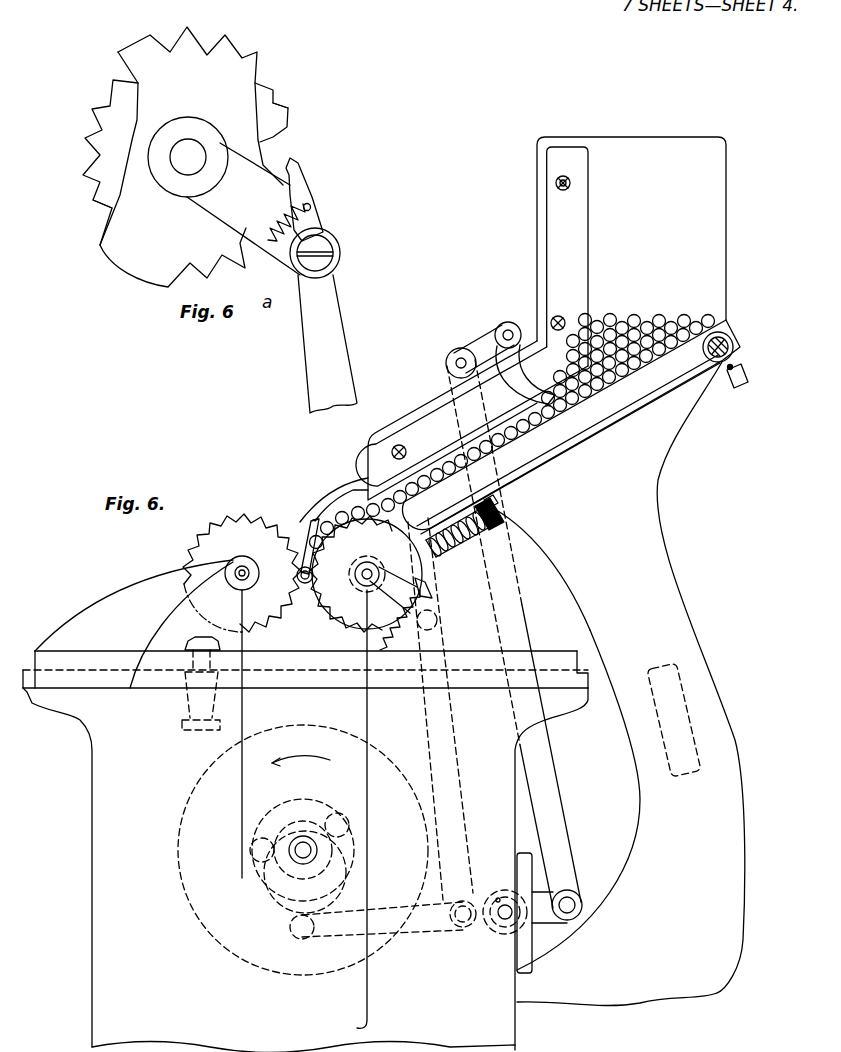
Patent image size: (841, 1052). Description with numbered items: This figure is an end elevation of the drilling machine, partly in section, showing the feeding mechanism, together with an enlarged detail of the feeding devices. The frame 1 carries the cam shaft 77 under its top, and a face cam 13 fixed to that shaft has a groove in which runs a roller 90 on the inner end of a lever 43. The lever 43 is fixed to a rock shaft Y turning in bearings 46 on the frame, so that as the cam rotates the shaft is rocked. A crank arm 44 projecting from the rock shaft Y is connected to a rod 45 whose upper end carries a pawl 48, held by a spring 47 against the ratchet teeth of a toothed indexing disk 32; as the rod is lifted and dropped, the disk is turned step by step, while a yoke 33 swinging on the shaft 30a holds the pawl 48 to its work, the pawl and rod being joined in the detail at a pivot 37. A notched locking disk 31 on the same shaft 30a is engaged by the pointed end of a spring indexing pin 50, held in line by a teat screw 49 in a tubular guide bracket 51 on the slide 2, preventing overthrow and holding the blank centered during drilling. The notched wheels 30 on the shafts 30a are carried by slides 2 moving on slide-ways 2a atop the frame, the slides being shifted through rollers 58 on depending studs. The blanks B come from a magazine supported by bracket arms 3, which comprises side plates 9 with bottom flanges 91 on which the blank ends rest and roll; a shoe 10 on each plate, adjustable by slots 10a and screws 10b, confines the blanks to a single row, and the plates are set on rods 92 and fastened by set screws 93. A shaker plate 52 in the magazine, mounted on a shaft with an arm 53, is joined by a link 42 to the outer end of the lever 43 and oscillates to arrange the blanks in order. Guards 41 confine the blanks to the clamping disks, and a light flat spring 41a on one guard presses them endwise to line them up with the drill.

In FIG. 6, the frame 1 is at (92, 806).
In FIG. 6, the slide 2 is at (137, 592).
In FIG. 6, the slide-way 2a is at (585, 672).
In FIG. 6, the bracket arm 3 is at (662, 512).
In FIG. 6, the side plate 9 is at (696, 145).
In FIG. 6, the shoe 10 is at (428, 422).
In FIG. 6, the slot 10a is at (572, 187).
In FIG. 6, the screw 10b is at (566, 176).
In FIG. 6, the face cam 13 is at (182, 866).
In FIG. 6A, the notched wheel 30 is at (255, 60).
In FIG. 6, the notched wheel 30 is at (302, 771).
In FIG. 6, the shaft 30a is at (232, 578).
In FIG. 6A, the locking disk 31 is at (100, 205).
In FIG. 6A, the indexing disk 32 is at (275, 107).
In FIG. 6A, the yoke 33 is at (247, 185).
In FIG. 6, the yoke 33 is at (372, 597).
In FIG. 6A, the pivot pin 37 is at (322, 248).
In FIG. 6, the guard 41 is at (332, 508).
In FIG. 6, the flat spring 41a is at (311, 528).
In FIG. 6, the link 42 is at (447, 380).
In FIG. 6, the lever 43 is at (425, 932).
In FIG. 6, the crank arm 44 is at (498, 898).
In FIG. 6A, the rod 45 is at (338, 312).
In FIG. 6, the rod 45 is at (458, 778).
In FIG. 6, the bearing 46 is at (508, 930).
In FIG. 6A, the spring 47 is at (278, 262).
In FIG. 6, the spring 47 is at (380, 648).
In FIG. 6A, the pawl 48 is at (312, 190).
In FIG. 6, the pawl 48 is at (432, 600).
In FIG. 6, the teat screw 49 is at (452, 552).
In FIG. 6, the spring indexing pin 50 is at (495, 530).
In FIG. 6, the tubular guide bracket 51 is at (498, 509).
In FIG. 6, the shaker plate 52 is at (510, 322).
In FIG. 6, the arm 53 is at (468, 345).
In FIG. 6, the roller 58 is at (190, 732).
In FIG. 6, the cam shaft 77 is at (302, 848).
In FIG. 6, the roller 90 is at (296, 932).
In FIG. 6, the bottom flange 91 is at (706, 322).
In FIG. 6, the rod 92 is at (733, 346).
In FIG. 6, the set screw 93 is at (748, 378).
In FIG. 6, the blank B is at (636, 326).
In FIG. 6, the rock shaft Y is at (488, 920).